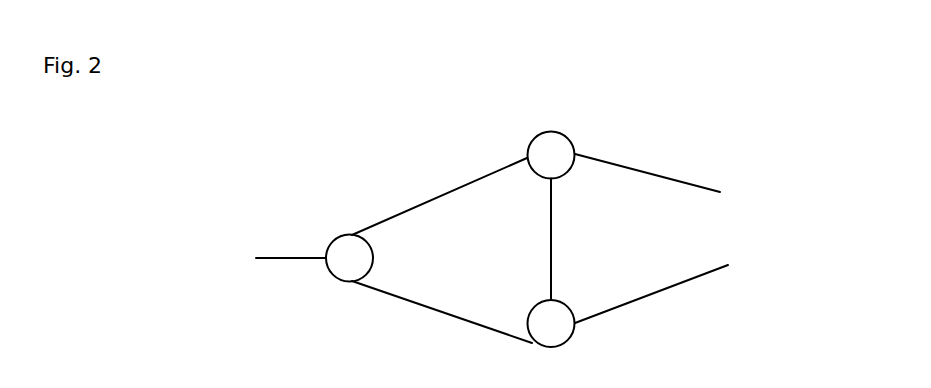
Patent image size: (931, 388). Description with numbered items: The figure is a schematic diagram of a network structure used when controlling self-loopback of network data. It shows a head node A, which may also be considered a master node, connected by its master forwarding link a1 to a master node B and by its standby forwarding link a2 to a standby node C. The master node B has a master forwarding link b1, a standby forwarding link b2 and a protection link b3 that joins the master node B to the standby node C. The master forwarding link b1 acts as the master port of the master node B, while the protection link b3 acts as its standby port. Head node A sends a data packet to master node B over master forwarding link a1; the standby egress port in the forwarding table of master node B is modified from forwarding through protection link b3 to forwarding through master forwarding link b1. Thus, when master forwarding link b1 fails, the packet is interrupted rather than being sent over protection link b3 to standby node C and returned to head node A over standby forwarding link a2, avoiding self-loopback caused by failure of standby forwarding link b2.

The head node A is at (349, 258).
The master node B is at (551, 155).
The standby node C is at (551, 323).
The master forwarding link a1 is at (439, 196).
The standby forwarding link a2 is at (442, 312).
The master forwarding link b1 is at (647, 167).
The standby forwarding link b2 is at (651, 301).
The protection link b3 is at (537, 240).